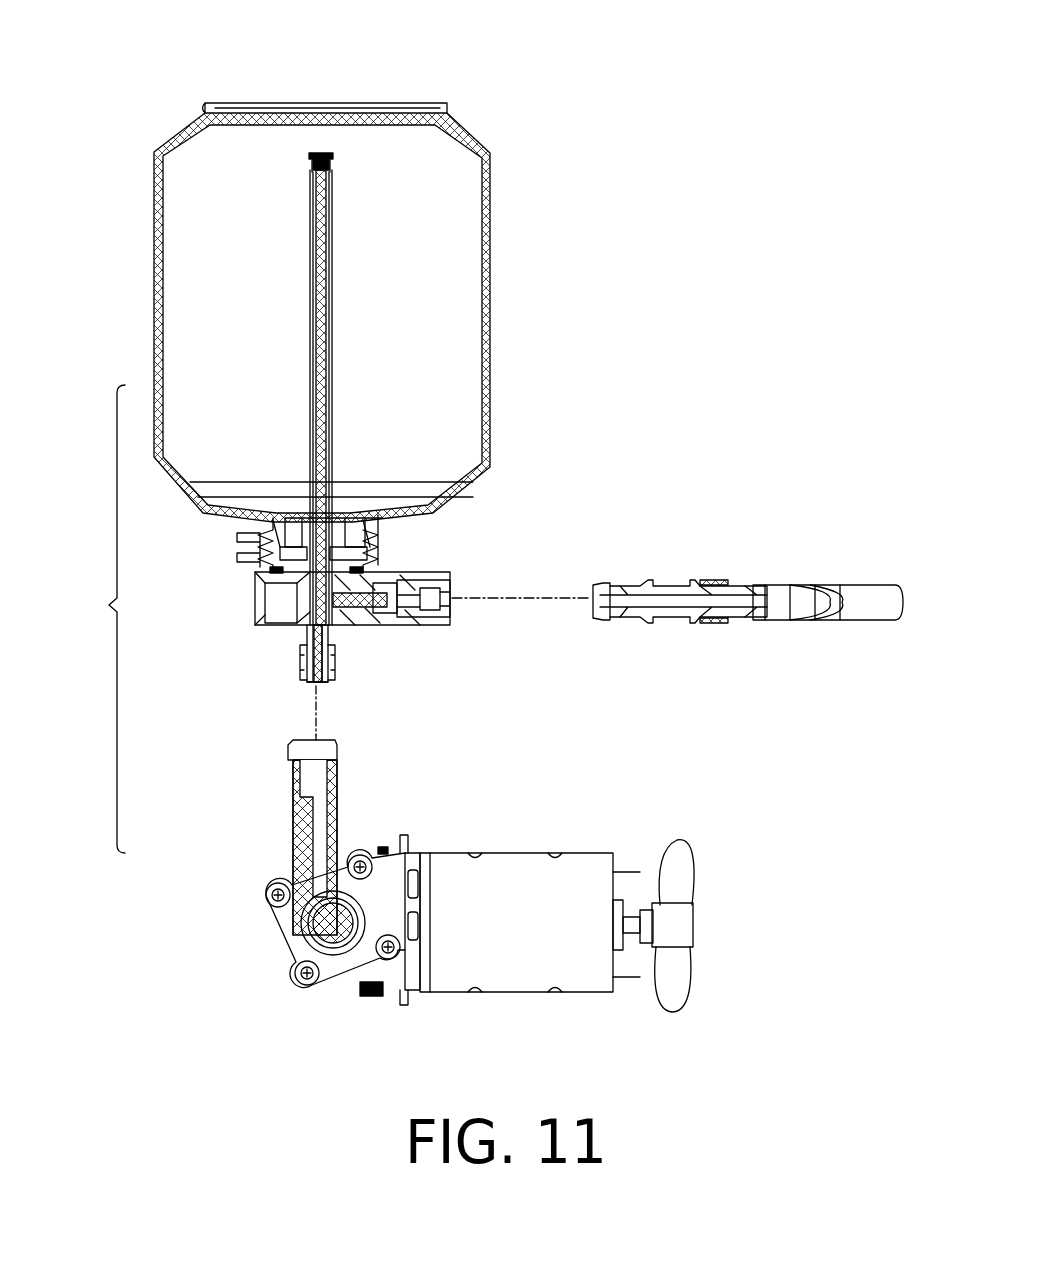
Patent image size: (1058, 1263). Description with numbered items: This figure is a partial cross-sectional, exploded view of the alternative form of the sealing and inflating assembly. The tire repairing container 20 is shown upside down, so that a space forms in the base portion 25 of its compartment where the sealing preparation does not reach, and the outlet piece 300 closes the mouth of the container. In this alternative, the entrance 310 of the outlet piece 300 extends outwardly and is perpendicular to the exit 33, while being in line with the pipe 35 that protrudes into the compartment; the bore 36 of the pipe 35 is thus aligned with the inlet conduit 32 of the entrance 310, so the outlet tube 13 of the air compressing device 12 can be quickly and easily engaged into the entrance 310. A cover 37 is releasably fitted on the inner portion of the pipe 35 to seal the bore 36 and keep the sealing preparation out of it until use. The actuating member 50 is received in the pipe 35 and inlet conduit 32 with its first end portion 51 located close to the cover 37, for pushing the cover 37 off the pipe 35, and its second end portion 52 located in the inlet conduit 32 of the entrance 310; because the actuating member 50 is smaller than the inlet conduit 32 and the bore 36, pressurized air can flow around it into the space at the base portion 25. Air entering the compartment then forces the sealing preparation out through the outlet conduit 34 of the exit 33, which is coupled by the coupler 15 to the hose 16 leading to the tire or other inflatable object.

The air compressing device 12 is at (528, 875).
The outlet tube 13 is at (323, 802).
The coupler 15 is at (677, 583).
The hose 16 is at (863, 593).
The tire repairing container 20 is at (486, 306).
The base portion 25 is at (467, 133).
The inlet conduit 32 is at (325, 623).
The exit 33 is at (447, 573).
The outlet conduit 34 is at (440, 592).
The pipe 35 is at (307, 267).
The bore 36 is at (327, 390).
The cover 37 is at (318, 152).
The actuating member 50 is at (307, 315).
The first end portion 51 is at (325, 203).
The second end portion 52 is at (318, 683).
The outlet piece 300 is at (260, 577).
The entrance 310 is at (305, 628).